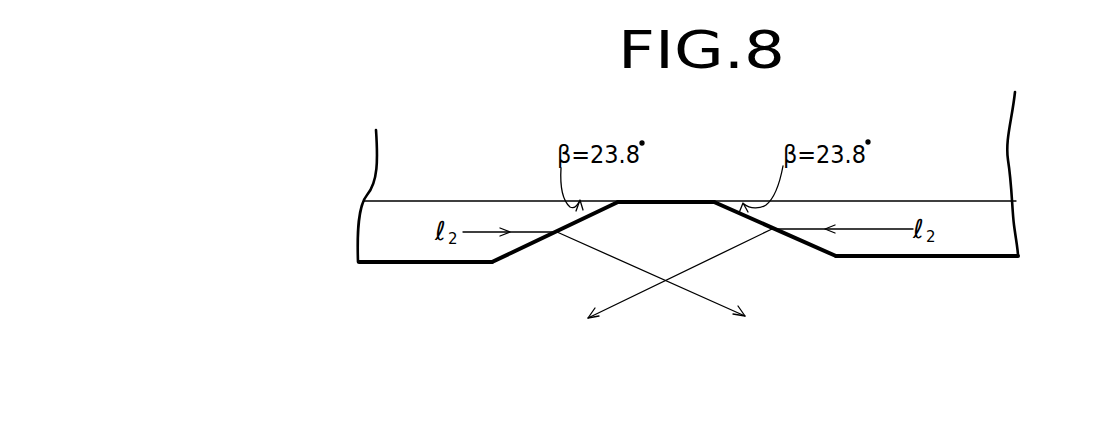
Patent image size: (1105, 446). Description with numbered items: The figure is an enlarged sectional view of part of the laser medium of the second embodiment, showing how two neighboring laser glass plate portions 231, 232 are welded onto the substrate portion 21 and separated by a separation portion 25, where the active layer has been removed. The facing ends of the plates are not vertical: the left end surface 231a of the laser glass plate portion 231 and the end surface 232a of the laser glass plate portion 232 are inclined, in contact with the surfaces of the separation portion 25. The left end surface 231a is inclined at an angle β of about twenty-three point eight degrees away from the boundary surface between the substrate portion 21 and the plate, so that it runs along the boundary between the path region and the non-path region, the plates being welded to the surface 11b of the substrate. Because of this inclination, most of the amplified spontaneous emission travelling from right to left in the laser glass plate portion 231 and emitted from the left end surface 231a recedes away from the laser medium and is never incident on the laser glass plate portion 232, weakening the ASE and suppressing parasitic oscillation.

The substrate portion 21 is at (998, 130).
The laser glass plate portion 231 is at (1000, 222).
The laser glass plate portion 232 is at (366, 243).
The left end surface 231a is at (808, 254).
The end surface 232a is at (517, 267).
The surface of the substrate portion 11b is at (968, 208).
The separation portion 25 is at (596, 263).